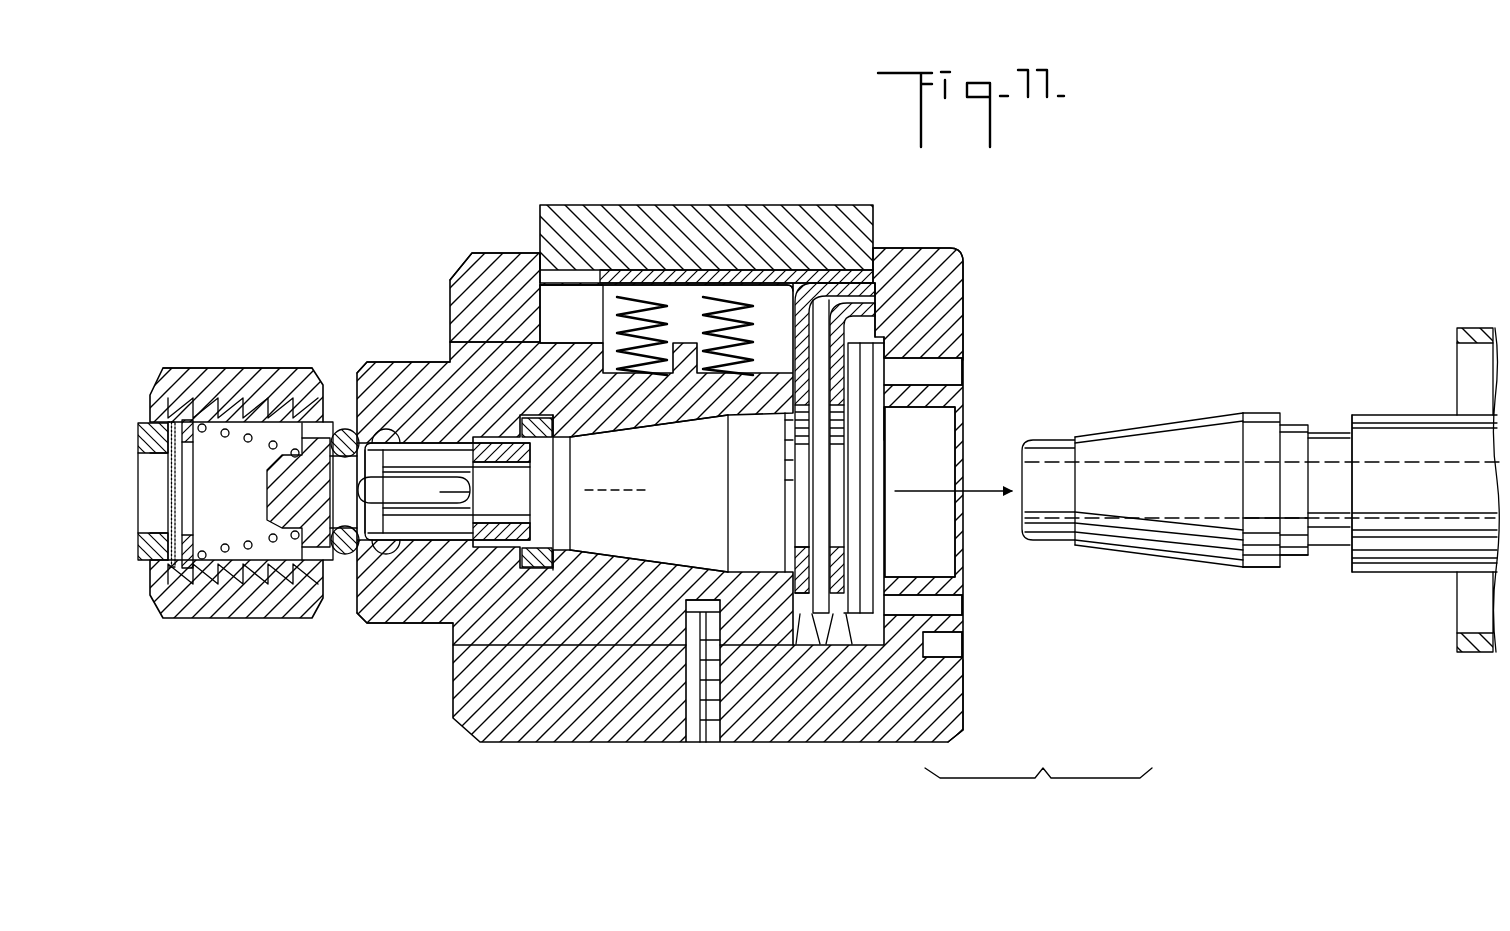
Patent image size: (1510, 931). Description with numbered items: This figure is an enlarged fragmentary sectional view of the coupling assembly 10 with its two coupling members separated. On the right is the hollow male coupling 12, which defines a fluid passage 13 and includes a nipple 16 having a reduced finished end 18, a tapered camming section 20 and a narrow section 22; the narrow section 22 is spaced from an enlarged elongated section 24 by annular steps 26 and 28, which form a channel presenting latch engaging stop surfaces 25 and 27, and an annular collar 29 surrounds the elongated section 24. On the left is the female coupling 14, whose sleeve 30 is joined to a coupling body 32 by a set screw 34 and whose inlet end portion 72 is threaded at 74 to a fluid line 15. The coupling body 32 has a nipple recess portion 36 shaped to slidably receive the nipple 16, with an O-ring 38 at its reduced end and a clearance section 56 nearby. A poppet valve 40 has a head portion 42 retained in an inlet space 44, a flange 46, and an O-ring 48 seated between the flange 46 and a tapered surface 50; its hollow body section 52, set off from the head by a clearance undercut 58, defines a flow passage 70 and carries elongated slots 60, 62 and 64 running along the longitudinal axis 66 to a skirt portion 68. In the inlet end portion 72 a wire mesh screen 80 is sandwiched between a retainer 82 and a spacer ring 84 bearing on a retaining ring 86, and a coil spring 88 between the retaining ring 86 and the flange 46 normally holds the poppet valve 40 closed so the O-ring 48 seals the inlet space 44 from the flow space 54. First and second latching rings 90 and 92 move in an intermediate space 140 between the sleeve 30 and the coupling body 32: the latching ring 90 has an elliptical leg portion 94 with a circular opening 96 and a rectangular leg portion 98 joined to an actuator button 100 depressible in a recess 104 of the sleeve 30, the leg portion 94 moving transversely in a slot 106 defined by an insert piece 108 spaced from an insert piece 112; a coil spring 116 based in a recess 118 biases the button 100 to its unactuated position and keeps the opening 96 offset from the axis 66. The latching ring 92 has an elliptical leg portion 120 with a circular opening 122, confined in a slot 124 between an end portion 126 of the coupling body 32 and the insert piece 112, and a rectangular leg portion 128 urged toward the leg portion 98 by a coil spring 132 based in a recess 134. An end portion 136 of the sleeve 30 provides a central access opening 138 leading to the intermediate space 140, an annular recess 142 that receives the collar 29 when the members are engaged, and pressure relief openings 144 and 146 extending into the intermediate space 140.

The coupling assembly 10 is at (1038, 794).
The male coupling 12 is at (1372, 386).
The fluid passage 13 is at (1018, 478).
The female coupling 14 is at (500, 250).
The line 15 is at (260, 366).
The nipple 16 is at (1168, 563).
The reduced finished end 18 is at (1053, 440).
The tapered camming section 20 is at (1147, 428).
The narrow section 22 is at (1257, 413).
The enlarged elongated section 24 is at (1418, 415).
The latch engaging stop surface 25 is at (1285, 568).
The annular step 26 is at (1292, 425).
The latch engaging stop surface 27 is at (1313, 553).
The annular step 28 is at (1327, 433).
The annular collar 29 is at (1487, 326).
The sleeve 30 is at (507, 745).
The coupling body 32 is at (405, 624).
The set screw 34 is at (700, 708).
The nipple recess portion 36 is at (679, 504).
The O-ring 38 is at (553, 430).
The poppet valve 40 is at (482, 547).
The head portion 42 is at (308, 548).
The inlet space 44 is at (267, 492).
The flange 46 is at (308, 440).
The O-ring 48 is at (333, 577).
The tapered surface 50 is at (333, 428).
The hollow body section 52 is at (515, 547).
The flow space 54 is at (393, 540).
The clearance section 56 is at (517, 565).
The clearance undercut 58 is at (378, 440).
The elongated slot 60 is at (418, 450).
The elongated slot 62 is at (423, 502).
The elongated slot 64 is at (412, 530).
The longitudinal axis 66 is at (598, 494).
The skirt portion 68 is at (487, 443).
The flow passage 70 is at (512, 492).
The inlet end portion 72 is at (155, 410).
The threads 74 is at (200, 410).
The wire mesh screen 80 is at (158, 497).
The retainer 82 is at (153, 457).
The spacer ring 84 is at (187, 560).
The retaining ring 86 is at (193, 560).
The coil spring 88 is at (250, 550).
The first latching ring 90 is at (923, 267).
The second latching ring 92 is at (875, 252).
The elliptical leg portion 94 is at (888, 315).
The circular opening 96 is at (840, 558).
The rectangular leg portion 98 is at (688, 292).
The actuator button 100 is at (736, 205).
The recess 104 is at (550, 312).
The slot 106 is at (858, 620).
The insert piece 108 is at (883, 627).
The insert piece 112 is at (838, 640).
The coil spring 116 is at (656, 285).
The recess 118 is at (612, 340).
The elliptical leg portion 120 is at (790, 410).
The circular opening 122 is at (803, 463).
The slot 124 is at (820, 612).
The end portion 126 is at (800, 612).
The rectangular leg portion 128 is at (792, 290).
The coil spring 132 is at (745, 300).
The recess 134 is at (762, 343).
The end portion 136 is at (965, 698).
The central access opening 138 is at (958, 545).
The intermediate space 140 is at (867, 432).
The annular recess 142 is at (957, 638).
The pressure relief opening 144 is at (964, 602).
The pressure relief opening 146 is at (955, 373).